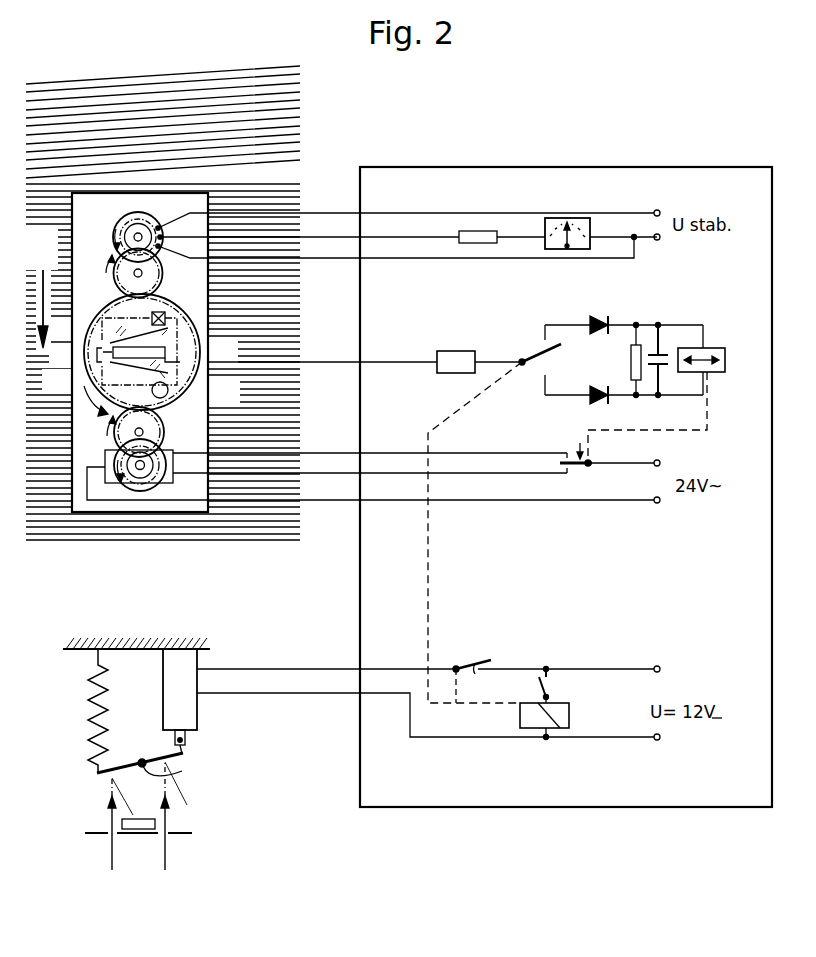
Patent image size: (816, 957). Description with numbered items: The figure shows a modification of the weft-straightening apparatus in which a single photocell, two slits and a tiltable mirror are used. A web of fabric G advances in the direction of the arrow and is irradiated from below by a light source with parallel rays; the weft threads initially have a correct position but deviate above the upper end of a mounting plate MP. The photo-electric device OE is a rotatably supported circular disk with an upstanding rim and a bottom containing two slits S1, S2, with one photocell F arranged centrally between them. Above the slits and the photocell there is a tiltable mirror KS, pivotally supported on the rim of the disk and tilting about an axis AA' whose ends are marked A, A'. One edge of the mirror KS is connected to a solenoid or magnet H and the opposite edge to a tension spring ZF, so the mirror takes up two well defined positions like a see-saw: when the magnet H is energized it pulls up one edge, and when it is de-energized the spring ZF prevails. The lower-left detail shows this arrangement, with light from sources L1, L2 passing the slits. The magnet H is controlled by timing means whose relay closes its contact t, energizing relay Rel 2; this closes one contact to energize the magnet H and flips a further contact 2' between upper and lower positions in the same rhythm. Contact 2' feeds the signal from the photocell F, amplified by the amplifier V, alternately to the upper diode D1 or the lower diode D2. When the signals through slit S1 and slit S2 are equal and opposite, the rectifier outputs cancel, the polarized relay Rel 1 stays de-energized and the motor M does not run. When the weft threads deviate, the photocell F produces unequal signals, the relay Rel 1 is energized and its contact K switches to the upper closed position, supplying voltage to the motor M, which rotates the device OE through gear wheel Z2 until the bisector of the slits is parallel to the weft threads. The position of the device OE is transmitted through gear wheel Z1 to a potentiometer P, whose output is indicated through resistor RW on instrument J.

The web of fabric G is at (50, 265).
The potentiometer P is at (126, 223).
The mounting plate MP is at (183, 214).
The gear wheel Z1 is at (152, 273).
The tiltable mirror KS is at (108, 315).
The magnet H is at (167, 317).
The photocell F is at (166, 352).
The tilting axis end A is at (81, 354).
The tilting axis end A' is at (308, 352).
The tilting axis AA' is at (180, 769).
The slit S1 is at (110, 343).
The slit S2 is at (110, 362).
The light source 1 L1 is at (167, 892).
The light source 2 L2 is at (114, 892).
The photo-electric device OE is at (164, 397).
The tension spring ZF is at (168, 388).
The gear wheel Z2 is at (156, 432).
The motor M is at (158, 478).
The variable resistor RW is at (482, 231).
The indicating instrument J is at (588, 218).
The amplifier V is at (450, 390).
The contact 2' is at (565, 514).
The upper diode D1 is at (600, 316).
The lower diode D2 is at (600, 386).
The polarized relay Rel 1 is at (712, 373).
The contact K is at (584, 470).
The contact t is at (535, 685).
The relay Rel 2 is at (520, 718).